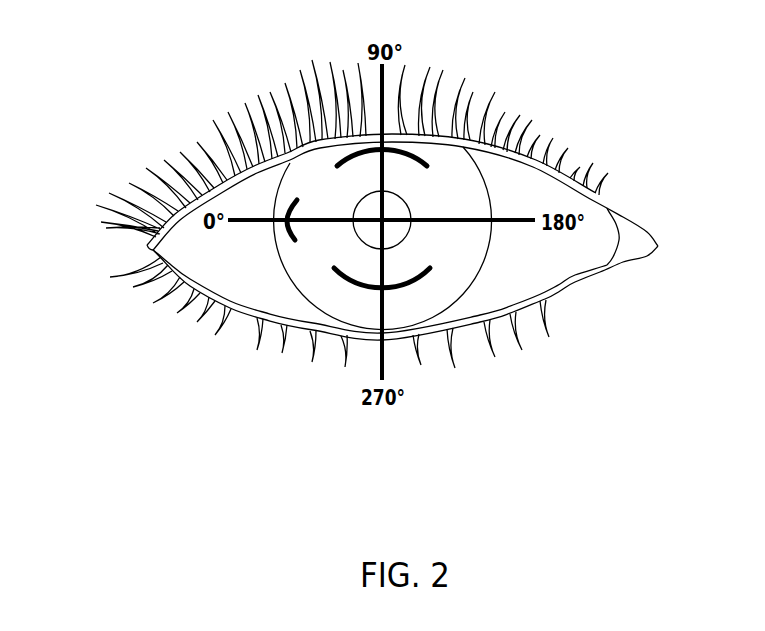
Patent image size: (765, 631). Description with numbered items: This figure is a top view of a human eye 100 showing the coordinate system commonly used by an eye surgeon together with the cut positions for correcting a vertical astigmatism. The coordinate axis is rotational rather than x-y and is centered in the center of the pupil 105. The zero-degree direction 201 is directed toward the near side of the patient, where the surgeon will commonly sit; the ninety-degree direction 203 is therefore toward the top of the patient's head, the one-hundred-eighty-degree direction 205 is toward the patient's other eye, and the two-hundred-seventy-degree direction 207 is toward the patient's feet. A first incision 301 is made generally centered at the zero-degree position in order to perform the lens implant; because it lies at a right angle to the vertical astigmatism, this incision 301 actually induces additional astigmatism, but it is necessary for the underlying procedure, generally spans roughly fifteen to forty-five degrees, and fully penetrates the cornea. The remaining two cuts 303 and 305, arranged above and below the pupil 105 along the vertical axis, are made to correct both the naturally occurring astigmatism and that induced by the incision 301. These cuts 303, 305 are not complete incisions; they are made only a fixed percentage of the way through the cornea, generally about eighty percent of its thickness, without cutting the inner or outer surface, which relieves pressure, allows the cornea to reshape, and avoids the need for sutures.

The eye 100 is at (150, 90).
The pupil 105 is at (411, 212).
The 0° position 201 is at (233, 224).
The 90° position 203 is at (380, 102).
The 180° position 205 is at (520, 224).
The 270° position 207 is at (383, 363).
The first incision 301 is at (284, 237).
The cut 303 is at (416, 268).
The cut 305 is at (427, 167).